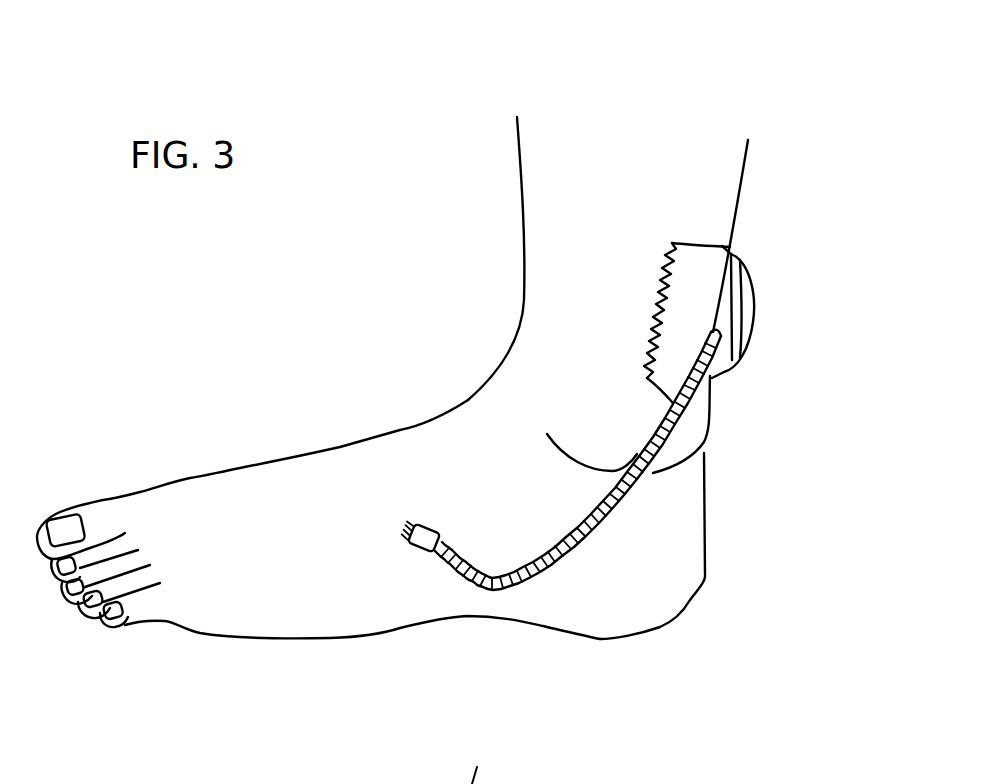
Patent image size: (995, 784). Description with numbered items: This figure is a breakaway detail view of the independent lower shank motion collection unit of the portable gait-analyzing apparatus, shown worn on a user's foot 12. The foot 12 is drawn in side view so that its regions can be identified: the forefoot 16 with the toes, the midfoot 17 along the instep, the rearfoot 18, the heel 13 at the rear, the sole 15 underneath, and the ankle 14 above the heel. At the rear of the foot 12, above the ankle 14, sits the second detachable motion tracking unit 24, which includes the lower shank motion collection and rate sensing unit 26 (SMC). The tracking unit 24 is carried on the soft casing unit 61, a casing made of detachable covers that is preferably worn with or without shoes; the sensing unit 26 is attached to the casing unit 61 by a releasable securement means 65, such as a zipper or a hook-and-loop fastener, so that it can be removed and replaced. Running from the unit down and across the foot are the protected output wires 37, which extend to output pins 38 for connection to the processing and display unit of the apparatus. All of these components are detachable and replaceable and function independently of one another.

The foot 12 is at (317, 414).
The heel 13 is at (705, 575).
The ankle 14 is at (603, 440).
The sole 15 is at (352, 637).
The forefoot 16 is at (187, 505).
The midfoot 17 is at (390, 459).
The rearfoot 18 is at (645, 631).
The second detachable motion tracking unit 24 is at (783, 305).
The lower shank motion collection and rate sensing unit 26 is at (753, 327).
The protected output wires 37 is at (557, 568).
The output pins 38 is at (422, 558).
The soft casing unit 61 is at (702, 277).
The releasable securement means 65 is at (731, 261).